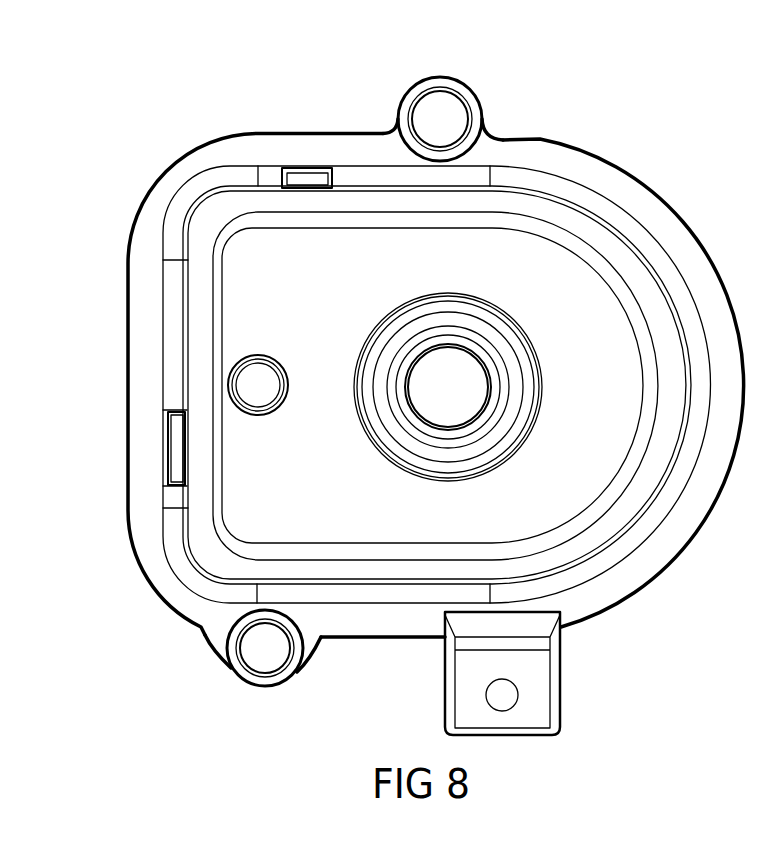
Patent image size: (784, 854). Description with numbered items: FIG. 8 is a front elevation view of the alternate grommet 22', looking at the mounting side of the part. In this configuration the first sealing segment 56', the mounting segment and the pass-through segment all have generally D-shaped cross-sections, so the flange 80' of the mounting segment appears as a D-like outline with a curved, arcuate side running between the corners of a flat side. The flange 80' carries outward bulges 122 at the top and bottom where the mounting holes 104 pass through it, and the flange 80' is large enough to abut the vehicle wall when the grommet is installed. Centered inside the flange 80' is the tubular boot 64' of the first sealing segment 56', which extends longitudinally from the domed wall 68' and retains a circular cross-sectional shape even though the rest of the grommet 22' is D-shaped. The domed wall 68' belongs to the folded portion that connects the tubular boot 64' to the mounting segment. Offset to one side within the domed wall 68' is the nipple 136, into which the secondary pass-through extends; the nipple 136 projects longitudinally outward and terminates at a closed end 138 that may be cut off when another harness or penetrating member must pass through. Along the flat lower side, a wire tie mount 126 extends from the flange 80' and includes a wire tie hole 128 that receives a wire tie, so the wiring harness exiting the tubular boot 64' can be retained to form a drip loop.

The grommet 22' is at (406, 343).
The first sealing segment 56' is at (458, 391).
The tubular boot 64' is at (559, 371).
The domed wall 68' is at (461, 369).
The flange 80' is at (437, 355).
The mounting holes 104 is at (442, 110).
The outward bulges 122 is at (398, 86).
The wire tie mount 126 is at (470, 668).
The wire tie hole 128 is at (502, 697).
The nipple 136 is at (236, 363).
The closed end 138 is at (258, 385).